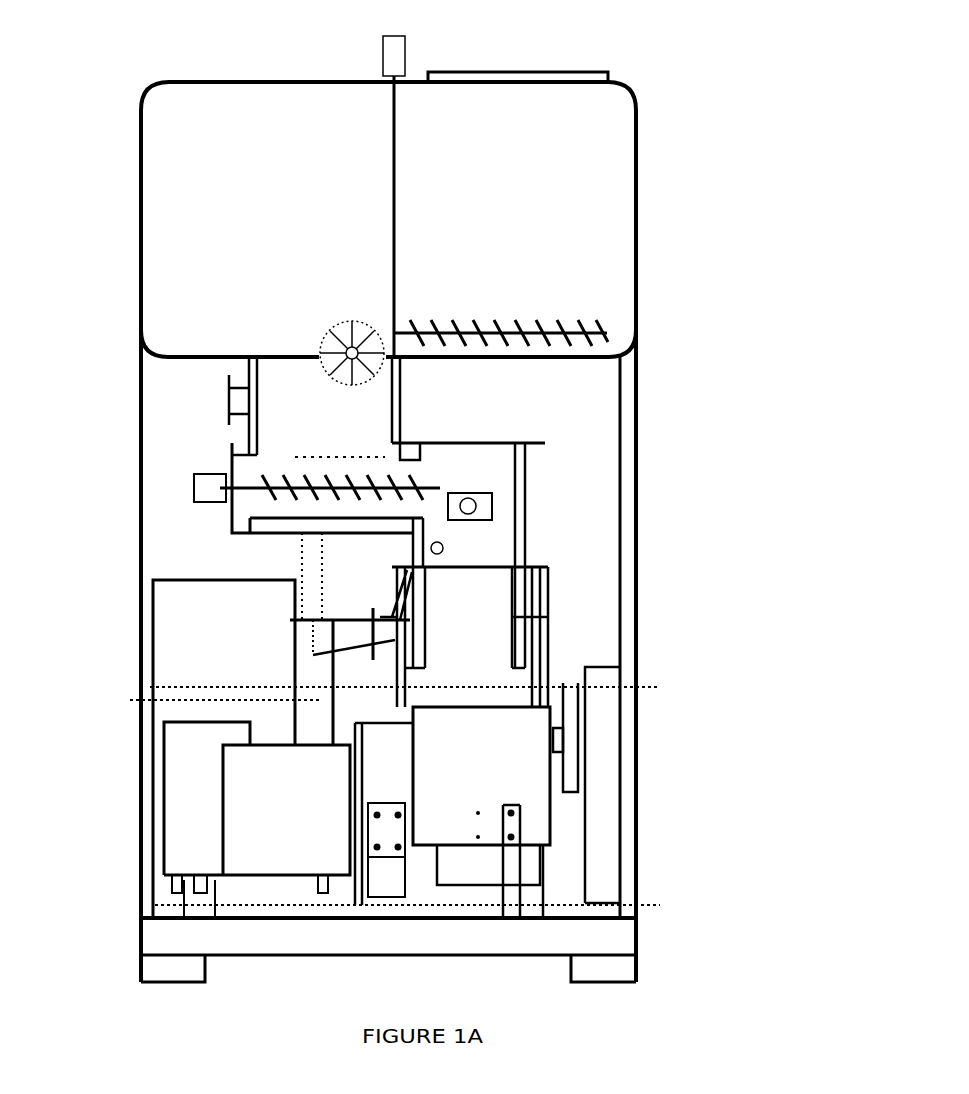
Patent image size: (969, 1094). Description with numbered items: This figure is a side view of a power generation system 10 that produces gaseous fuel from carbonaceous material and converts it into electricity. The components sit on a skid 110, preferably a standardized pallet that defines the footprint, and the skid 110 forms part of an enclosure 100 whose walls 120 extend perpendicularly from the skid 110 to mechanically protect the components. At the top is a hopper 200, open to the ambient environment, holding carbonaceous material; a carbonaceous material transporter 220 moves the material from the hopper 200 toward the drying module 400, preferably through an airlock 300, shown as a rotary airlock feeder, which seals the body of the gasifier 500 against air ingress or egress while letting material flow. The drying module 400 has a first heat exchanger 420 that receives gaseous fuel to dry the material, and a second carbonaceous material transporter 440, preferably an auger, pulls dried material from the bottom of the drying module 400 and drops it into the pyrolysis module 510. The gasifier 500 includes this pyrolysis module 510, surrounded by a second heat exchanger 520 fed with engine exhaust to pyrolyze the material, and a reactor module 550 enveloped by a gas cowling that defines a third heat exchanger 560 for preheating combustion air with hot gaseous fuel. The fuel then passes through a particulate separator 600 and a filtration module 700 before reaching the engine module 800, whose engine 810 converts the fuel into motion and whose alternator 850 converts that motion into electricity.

The power generation system 10 is at (128, 72).
The enclosure 100 is at (665, 357).
The skid 110 is at (180, 933).
The walls 120 is at (640, 418).
The hopper 200 is at (609, 162).
The carbonaceous material transporter 220 is at (600, 311).
The airlock 300 is at (318, 352).
The drying module 400 is at (285, 433).
The first heat exchanger 420 is at (403, 427).
The second carbonaceous material transporter 440 is at (245, 497).
The gasifier 500 is at (638, 433).
The pyrolysis module 510 is at (481, 463).
The second heat exchanger 520 is at (522, 511).
The reactor module 550 is at (488, 597).
The third heat exchanger 560 is at (544, 676).
The particulate separator 600 is at (298, 668).
The filtration module 700 is at (213, 610).
The engine module 800 is at (638, 686).
The engine 810 is at (528, 822).
The alternator 850 is at (190, 815).